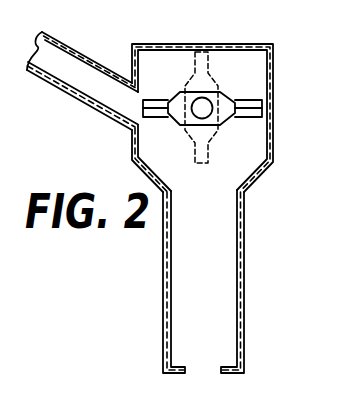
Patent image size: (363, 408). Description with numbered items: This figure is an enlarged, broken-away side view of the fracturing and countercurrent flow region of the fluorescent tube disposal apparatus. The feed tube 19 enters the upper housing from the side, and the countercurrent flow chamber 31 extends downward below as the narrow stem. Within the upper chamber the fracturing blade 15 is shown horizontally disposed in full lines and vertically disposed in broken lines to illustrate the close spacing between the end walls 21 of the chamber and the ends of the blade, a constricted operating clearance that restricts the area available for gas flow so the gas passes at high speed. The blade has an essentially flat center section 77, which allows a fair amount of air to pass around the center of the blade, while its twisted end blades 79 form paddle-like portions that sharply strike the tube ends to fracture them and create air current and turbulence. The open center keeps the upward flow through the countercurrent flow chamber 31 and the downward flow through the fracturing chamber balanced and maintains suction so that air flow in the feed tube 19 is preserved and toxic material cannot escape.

The fracturing blade 15 is at (234, 96).
The feed tube 19 is at (88, 80).
The end walls 21 is at (215, 129).
The countercurrent flow chamber 31 is at (215, 272).
The center section 77 is at (233, 117).
The end blades 79 is at (169, 118).